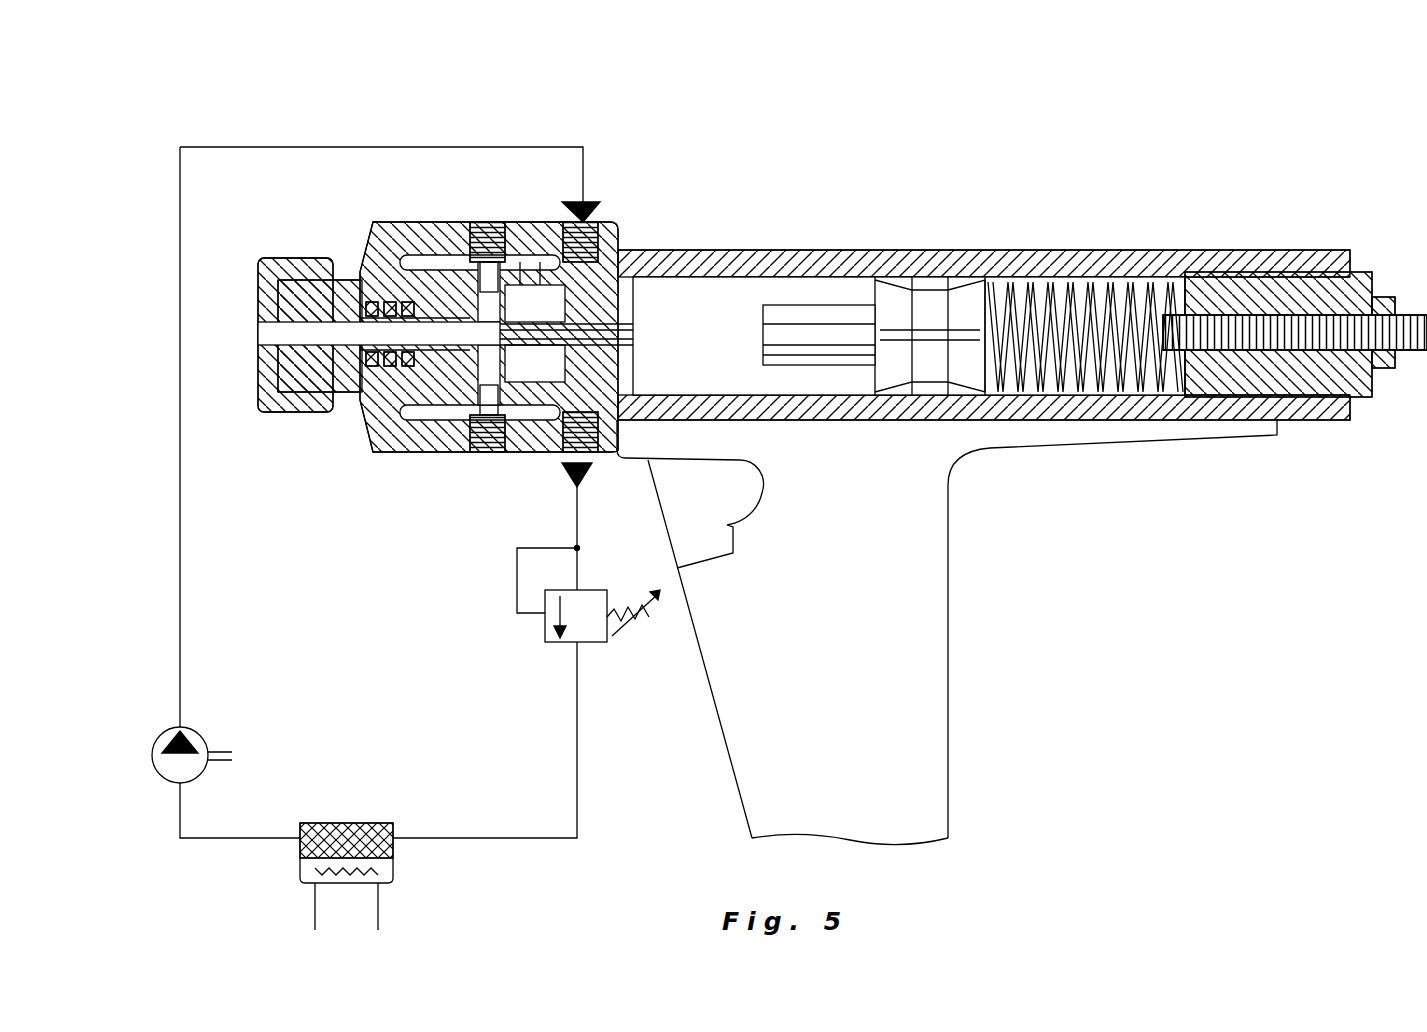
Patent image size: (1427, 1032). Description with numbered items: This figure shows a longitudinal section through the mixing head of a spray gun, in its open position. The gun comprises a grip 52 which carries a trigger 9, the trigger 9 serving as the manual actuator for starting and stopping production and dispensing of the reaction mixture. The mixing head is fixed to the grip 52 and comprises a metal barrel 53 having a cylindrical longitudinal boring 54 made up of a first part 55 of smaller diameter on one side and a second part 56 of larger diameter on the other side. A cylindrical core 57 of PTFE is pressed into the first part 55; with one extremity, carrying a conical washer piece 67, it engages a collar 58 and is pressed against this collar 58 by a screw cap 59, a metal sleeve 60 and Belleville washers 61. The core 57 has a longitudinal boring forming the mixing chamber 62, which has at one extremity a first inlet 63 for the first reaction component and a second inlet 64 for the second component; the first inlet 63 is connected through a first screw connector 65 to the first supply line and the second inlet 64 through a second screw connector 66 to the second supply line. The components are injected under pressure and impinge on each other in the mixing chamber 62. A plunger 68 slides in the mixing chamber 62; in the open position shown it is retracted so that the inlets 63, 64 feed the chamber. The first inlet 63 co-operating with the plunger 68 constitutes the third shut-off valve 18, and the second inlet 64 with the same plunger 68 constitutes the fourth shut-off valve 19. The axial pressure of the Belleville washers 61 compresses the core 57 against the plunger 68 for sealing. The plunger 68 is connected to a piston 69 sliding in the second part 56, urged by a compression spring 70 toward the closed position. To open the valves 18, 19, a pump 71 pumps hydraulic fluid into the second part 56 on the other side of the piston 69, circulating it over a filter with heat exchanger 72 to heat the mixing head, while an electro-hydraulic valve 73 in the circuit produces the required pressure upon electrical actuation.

The trigger 9 is at (703, 497).
The third shut-off valve 18 is at (486, 153).
The fourth shut-off valve 19 is at (474, 508).
The grip 52 is at (900, 652).
The metal barrel 53 is at (750, 248).
The cylindrical longitudinal boring 54 is at (825, 295).
The first part of the boring 55 is at (300, 358).
The second part of the boring 56 is at (800, 395).
The cylindrical core 57 is at (447, 308).
The collar 58 is at (595, 240).
The screw cap 59 is at (275, 400).
The metal sleeve 60 is at (362, 367).
The Belleville washers 61 is at (408, 363).
The mixing chamber 62 is at (325, 333).
The first inlet 63 is at (458, 237).
The second inlet 64 is at (490, 367).
The first screw connector 65 is at (490, 232).
The second screw connector 66 is at (487, 428).
The conical washer piece 67 is at (545, 237).
The plunger 68 is at (447, 235).
The piston 69 is at (935, 300).
The compression spring 70 is at (1095, 290).
The pump 71 is at (200, 735).
The filter with heat exchanger 72 is at (390, 870).
The electro-hydraulic valve 73 is at (590, 622).